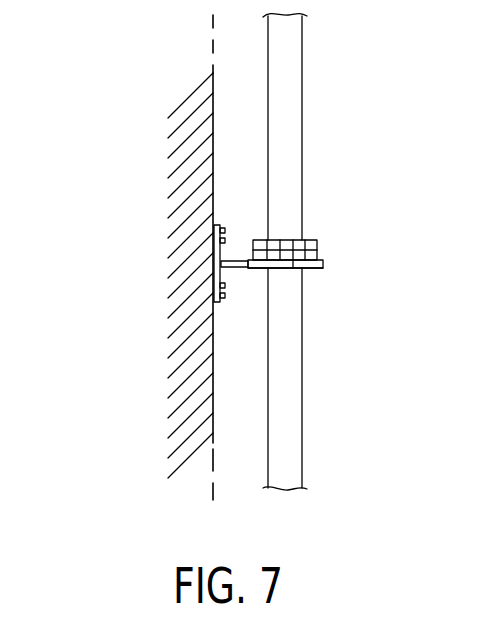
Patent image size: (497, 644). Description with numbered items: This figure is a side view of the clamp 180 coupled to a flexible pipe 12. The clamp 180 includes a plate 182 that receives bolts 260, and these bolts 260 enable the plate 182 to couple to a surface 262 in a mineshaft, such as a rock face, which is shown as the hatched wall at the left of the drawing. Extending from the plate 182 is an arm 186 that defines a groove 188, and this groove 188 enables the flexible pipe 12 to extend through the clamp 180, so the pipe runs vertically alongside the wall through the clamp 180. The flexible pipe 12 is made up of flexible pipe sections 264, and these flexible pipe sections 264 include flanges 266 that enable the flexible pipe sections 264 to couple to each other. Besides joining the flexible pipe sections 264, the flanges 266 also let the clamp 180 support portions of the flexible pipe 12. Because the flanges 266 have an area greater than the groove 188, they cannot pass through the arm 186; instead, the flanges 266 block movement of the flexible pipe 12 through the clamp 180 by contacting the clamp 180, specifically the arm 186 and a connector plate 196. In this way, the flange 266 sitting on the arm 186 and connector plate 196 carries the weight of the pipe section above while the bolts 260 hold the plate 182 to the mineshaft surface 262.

The flexible pipe 12 is at (333, 495).
The clamp 180 is at (143, 118).
The plate 182 is at (214, 250).
The arm 186 is at (247, 270).
The groove 188 is at (283, 269).
The connector plate 196 is at (313, 269).
The bolts 260 is at (226, 231).
The surface 262 is at (213, 128).
The flexible pipe sections 264 is at (288, 103).
The flanges 266 is at (318, 250).